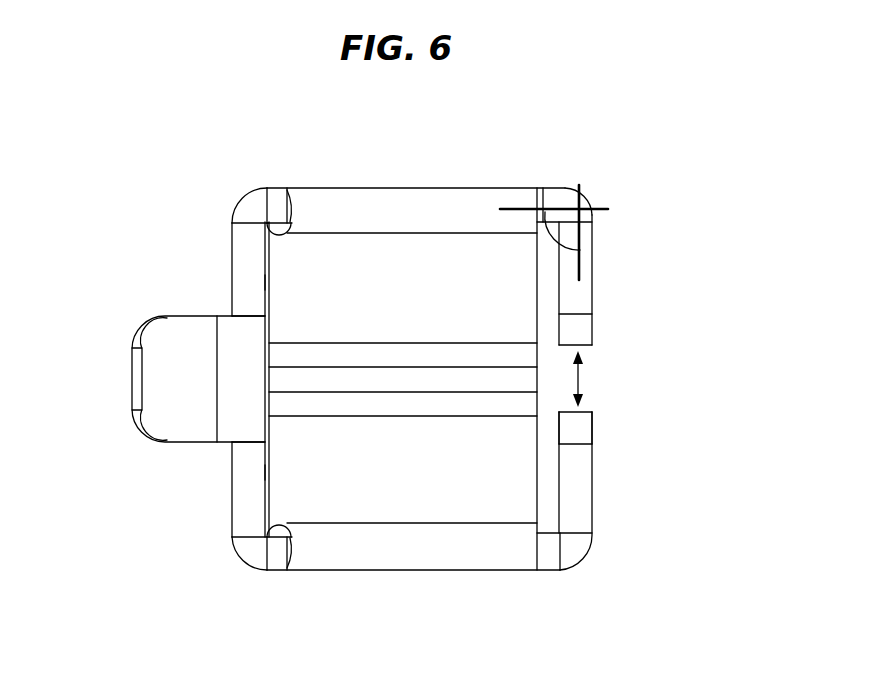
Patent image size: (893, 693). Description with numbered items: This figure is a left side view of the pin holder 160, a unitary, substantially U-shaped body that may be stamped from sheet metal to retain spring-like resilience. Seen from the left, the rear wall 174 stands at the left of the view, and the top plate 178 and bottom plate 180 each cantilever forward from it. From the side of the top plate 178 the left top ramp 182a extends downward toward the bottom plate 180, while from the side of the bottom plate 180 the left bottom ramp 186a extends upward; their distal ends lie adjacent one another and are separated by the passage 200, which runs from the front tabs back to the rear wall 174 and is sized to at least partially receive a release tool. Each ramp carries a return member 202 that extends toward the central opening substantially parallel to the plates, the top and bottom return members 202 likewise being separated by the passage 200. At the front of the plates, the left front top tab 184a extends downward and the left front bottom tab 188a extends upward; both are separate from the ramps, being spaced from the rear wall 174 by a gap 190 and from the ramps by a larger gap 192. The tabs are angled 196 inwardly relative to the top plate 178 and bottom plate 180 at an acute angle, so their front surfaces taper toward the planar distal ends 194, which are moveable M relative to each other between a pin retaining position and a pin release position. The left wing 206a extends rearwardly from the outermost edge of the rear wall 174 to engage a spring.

The pin holder 160 is at (672, 172).
The rear wall 174 is at (232, 272).
The top plate 178 is at (400, 186).
The bottom plate 180 is at (345, 576).
The left top ramp 182a is at (317, 262).
The left front top tab 184a is at (593, 268).
The left bottom ramp 186a is at (293, 488).
The left front bottom tab 188a is at (593, 513).
The gap 190 is at (245, 284).
The gap 192 is at (562, 289).
The distal ends 194 is at (576, 420).
The angle 196 is at (553, 236).
The passage 200 is at (410, 410).
The return member 202 is at (352, 398).
The left wing 206a is at (133, 374).
The movement M is at (584, 375).